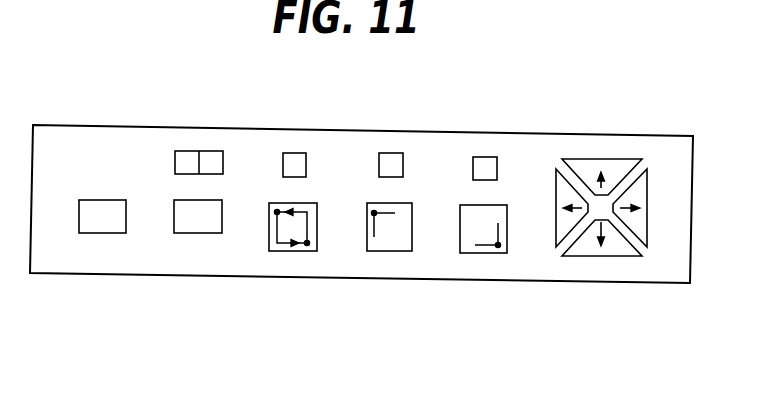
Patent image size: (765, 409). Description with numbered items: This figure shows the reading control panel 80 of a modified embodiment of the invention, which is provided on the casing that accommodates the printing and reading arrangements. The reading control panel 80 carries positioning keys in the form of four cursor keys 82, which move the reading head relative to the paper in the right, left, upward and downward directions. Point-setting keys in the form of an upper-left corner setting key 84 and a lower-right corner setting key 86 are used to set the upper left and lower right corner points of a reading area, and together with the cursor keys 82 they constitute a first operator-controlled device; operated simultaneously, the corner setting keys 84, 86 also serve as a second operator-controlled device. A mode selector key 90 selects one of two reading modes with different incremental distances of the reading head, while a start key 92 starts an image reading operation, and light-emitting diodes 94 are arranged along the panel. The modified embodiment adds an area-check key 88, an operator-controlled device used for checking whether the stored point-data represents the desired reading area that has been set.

The reading control panel 80 is at (356, 118).
The cursor keys 82 is at (613, 245).
The upper-left corner setting key 84 is at (393, 242).
The lower-right corner setting key 86 is at (482, 242).
The area-check key 88 is at (288, 235).
The mode selector key 90 is at (197, 224).
The start key 92 is at (102, 224).
The light-emitting diodes 94 is at (180, 166).